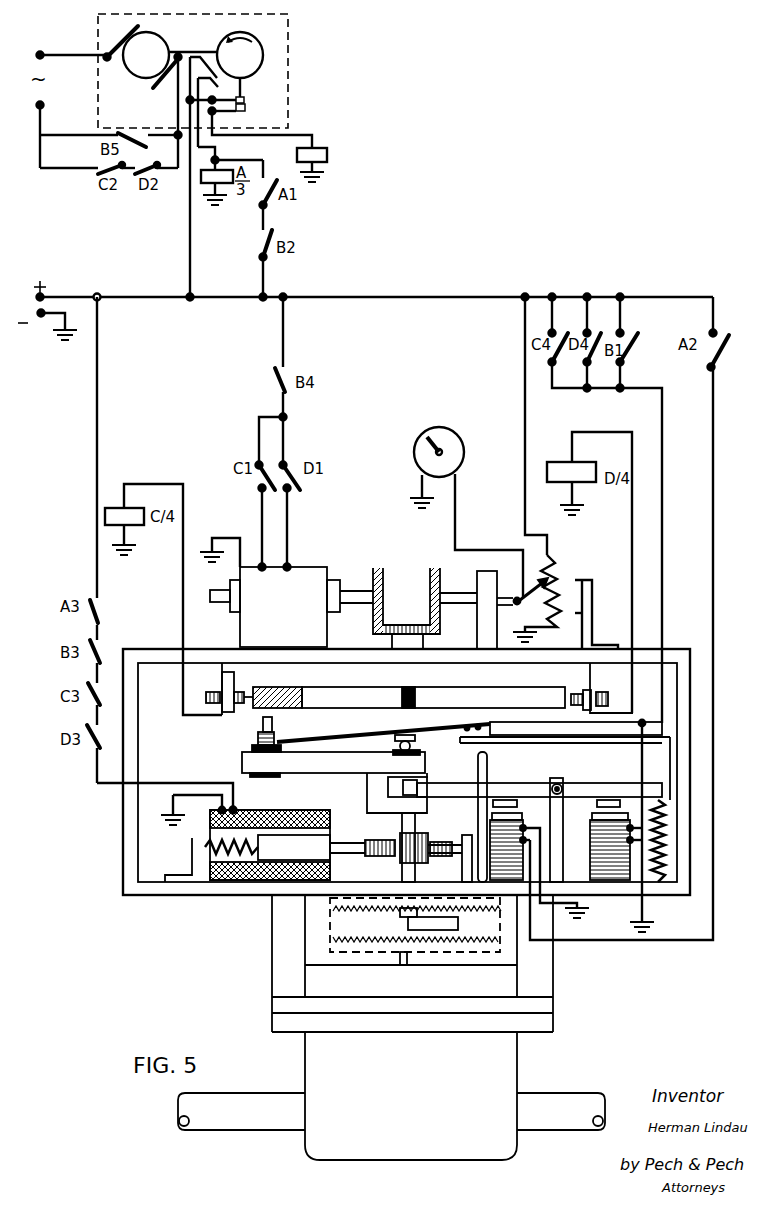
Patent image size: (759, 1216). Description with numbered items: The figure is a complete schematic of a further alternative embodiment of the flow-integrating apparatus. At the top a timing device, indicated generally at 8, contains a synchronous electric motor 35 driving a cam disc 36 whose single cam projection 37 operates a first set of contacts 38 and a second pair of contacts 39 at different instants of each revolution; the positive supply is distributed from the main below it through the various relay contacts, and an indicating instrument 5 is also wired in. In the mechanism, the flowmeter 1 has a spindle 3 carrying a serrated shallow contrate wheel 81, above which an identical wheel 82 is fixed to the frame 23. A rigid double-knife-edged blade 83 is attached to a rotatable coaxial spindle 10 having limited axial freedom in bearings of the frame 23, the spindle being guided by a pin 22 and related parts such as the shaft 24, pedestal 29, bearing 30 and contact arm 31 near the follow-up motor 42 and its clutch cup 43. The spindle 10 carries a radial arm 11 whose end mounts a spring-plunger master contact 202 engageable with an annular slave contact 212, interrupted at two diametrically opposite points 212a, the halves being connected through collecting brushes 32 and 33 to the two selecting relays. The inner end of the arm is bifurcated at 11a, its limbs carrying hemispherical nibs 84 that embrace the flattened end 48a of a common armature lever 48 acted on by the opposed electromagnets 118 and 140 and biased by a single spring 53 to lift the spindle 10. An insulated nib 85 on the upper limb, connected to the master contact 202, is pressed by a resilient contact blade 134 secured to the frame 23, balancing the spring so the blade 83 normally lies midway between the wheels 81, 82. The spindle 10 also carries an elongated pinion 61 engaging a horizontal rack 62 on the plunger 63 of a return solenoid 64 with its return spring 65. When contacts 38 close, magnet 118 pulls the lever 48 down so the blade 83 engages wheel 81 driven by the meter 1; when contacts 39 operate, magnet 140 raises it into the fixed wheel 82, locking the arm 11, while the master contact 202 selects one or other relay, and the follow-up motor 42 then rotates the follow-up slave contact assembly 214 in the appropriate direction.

The flowmeter 1 is at (413, 1082).
The flowmeter spindle 3 is at (413, 957).
The indicating instrument 5 is at (462, 447).
The controller 8 is at (195, 14).
The rotatable coaxial spindle 10 is at (400, 826).
The radial arm 11 is at (242, 765).
The bifurcated inner end of the radial arm 11a is at (372, 800).
The pin 22 is at (489, 768).
The frame 23 is at (278, 932).
The shaft 24 is at (426, 643).
The pedestal 29 is at (408, 624).
The bearing 30 is at (455, 592).
The contact arm 31 is at (566, 614).
The collecting brush 32 is at (212, 690).
The collecting brush 33 is at (612, 686).
The synchronous electric motor 35 is at (157, 65).
The cam disc 36 is at (251, 65).
The cam projection 37 is at (245, 100).
The first set of contacts 38 is at (193, 41).
The second pair of contacts 39 is at (246, 108).
The follow-up motor 42 is at (293, 619).
The clutch cup 43 is at (382, 572).
The common armature lever 48 is at (585, 783).
The flattened end of the armature lever 48a is at (388, 785).
The biasing spring 53 is at (666, 872).
The elongated pinion 61 is at (431, 842).
The horizontal rack 62 is at (450, 858).
The solenoid plunger 63 is at (330, 850).
The solenoid 64 is at (285, 810).
The spring 65 is at (205, 846).
The contrate wheel 81 is at (365, 942).
The fixed contrate wheel 82 is at (404, 921).
The double-knife-edged blade 83 is at (459, 925).
The hemispherical nib 84 is at (418, 790).
The hemispherical nib 85 is at (416, 747).
The electromagnet 118 is at (505, 882).
The resilient contact blade 134 is at (380, 733).
The electromagnet 140 is at (605, 875).
The master contact 202 is at (262, 726).
The annular slave contact 212 is at (283, 683).
The interruption points of the slave contact 212a is at (403, 690).
The follow-up slave contact assembly 214 is at (306, 690).